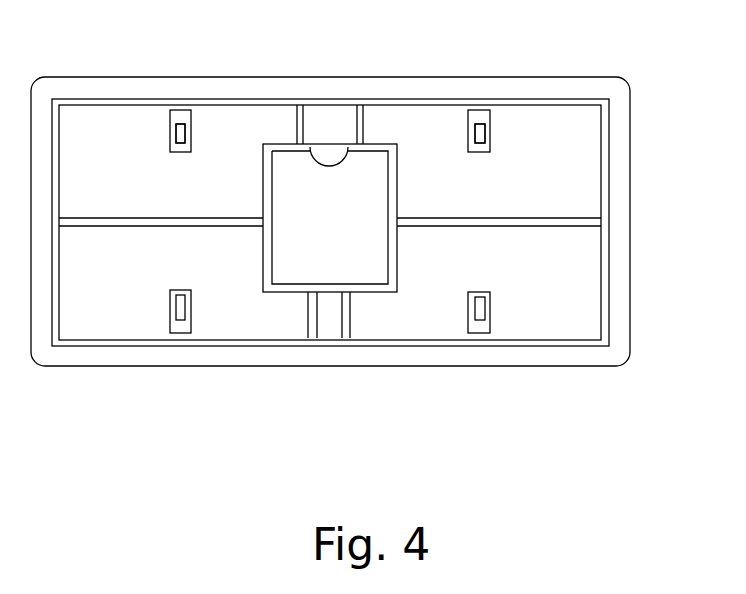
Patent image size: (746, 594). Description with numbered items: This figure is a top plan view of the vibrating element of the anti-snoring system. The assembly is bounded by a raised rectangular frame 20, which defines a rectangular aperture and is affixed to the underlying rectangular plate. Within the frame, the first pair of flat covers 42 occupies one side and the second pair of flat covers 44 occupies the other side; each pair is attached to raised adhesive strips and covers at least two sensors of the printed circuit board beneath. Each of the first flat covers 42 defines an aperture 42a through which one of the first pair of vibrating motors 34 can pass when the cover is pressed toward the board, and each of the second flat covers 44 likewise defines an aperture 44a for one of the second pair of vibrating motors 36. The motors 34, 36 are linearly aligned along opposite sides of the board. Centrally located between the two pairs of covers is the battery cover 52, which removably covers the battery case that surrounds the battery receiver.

The raised rectangular frame 20 is at (630, 252).
The first pair of vibrating motors 34 is at (180, 122).
The second pair of vibrating motors 36 is at (480, 122).
The first pair of flat covers 42 is at (161, 224).
The apertures 42a is at (168, 113).
The second pair of flat covers 44 is at (499, 221).
The apertures 44a is at (488, 133).
The battery cover 52 is at (330, 221).